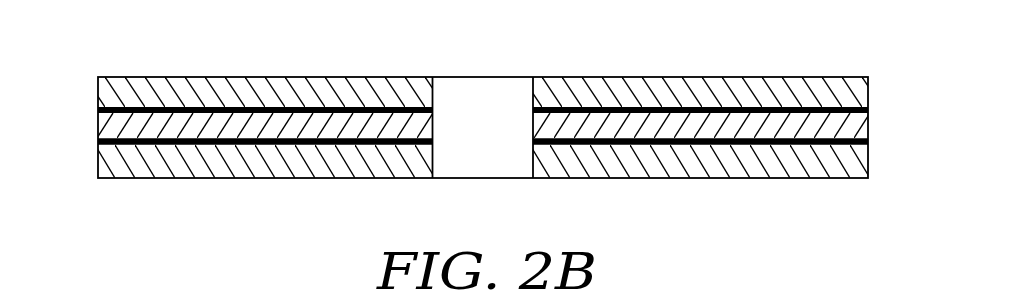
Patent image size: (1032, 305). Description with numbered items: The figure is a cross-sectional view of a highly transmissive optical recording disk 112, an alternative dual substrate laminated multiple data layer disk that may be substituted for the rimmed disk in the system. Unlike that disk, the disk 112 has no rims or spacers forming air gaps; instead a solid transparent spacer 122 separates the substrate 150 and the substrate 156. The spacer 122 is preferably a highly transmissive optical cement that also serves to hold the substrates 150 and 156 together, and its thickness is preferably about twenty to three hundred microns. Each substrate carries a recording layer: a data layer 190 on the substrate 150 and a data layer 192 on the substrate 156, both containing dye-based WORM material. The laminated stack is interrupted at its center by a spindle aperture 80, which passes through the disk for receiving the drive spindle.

The highly transmissive optical recording disk 112 is at (203, 195).
The substrate 156 is at (97, 97).
The solid transparent spacer 122 is at (226, 125).
The substrate 150 is at (97, 160).
The data layer 192 is at (818, 105).
The data layer 190 is at (817, 143).
The spindle aperture 80 is at (510, 163).